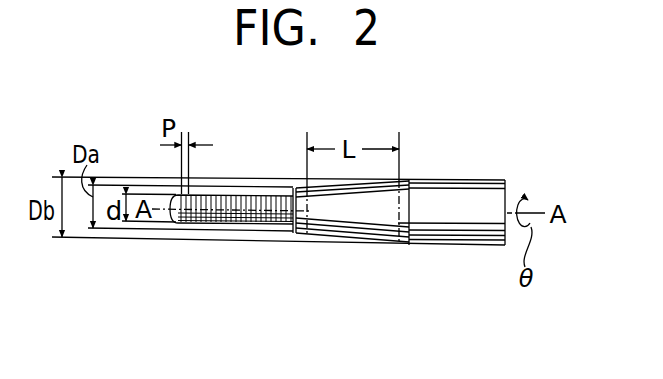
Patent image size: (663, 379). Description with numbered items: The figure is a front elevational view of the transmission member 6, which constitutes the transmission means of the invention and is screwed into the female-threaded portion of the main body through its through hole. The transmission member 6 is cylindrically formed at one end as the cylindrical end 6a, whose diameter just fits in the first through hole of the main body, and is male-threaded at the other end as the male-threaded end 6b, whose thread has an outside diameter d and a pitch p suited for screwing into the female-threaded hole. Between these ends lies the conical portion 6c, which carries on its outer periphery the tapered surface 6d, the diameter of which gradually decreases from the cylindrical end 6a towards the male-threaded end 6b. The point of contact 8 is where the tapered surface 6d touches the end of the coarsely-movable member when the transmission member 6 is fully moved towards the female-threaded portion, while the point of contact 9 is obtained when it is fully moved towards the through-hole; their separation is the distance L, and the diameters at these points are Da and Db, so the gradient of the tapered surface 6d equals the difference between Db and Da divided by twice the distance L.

The transmission member 6 is at (498, 168).
The cylindrical end 6a is at (457, 244).
The male-threaded end 6b is at (245, 193).
The conical portion 6c is at (332, 224).
The tapered surface 6d is at (357, 242).
The point of contact 8 is at (402, 180).
The point of contact 9 is at (305, 188).